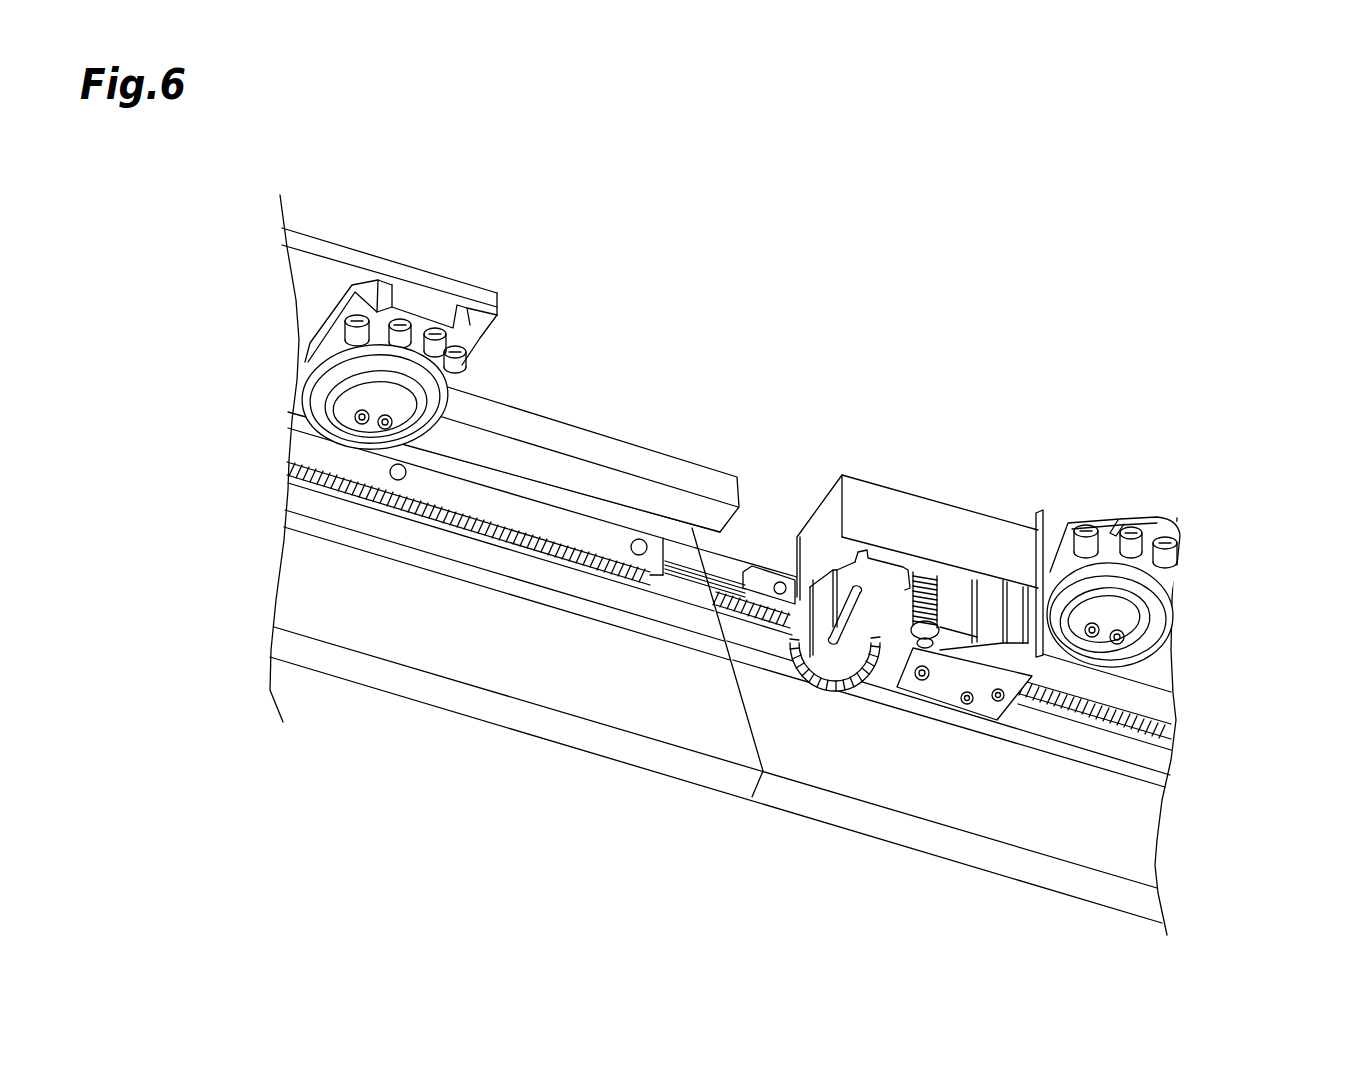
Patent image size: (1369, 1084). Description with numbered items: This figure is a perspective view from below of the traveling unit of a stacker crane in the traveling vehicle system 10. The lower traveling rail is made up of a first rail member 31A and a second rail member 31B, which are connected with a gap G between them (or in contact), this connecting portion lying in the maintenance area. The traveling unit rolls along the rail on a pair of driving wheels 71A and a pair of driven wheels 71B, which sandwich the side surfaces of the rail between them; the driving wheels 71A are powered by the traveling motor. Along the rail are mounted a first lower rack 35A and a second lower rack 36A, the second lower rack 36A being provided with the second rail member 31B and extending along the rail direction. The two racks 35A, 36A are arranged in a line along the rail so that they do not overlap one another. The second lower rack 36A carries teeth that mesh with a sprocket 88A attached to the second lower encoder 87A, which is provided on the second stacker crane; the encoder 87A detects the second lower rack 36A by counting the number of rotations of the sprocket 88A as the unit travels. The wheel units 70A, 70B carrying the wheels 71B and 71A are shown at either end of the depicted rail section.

The traveling vehicle system 10 is at (603, 695).
The first rail member 31A is at (303, 558).
The second rail member 31B is at (1140, 827).
The first lower rack 35A is at (296, 442).
The second lower rack 36A is at (1167, 700).
The first roller unit 70A is at (540, 332).
The second roller unit 70B is at (1180, 465).
The driving wheel 71A is at (1158, 574).
The driven wheel 71B is at (317, 388).
The second lower encoder 87A is at (890, 572).
The sprocket 88A is at (820, 700).
The gap G is at (737, 708).